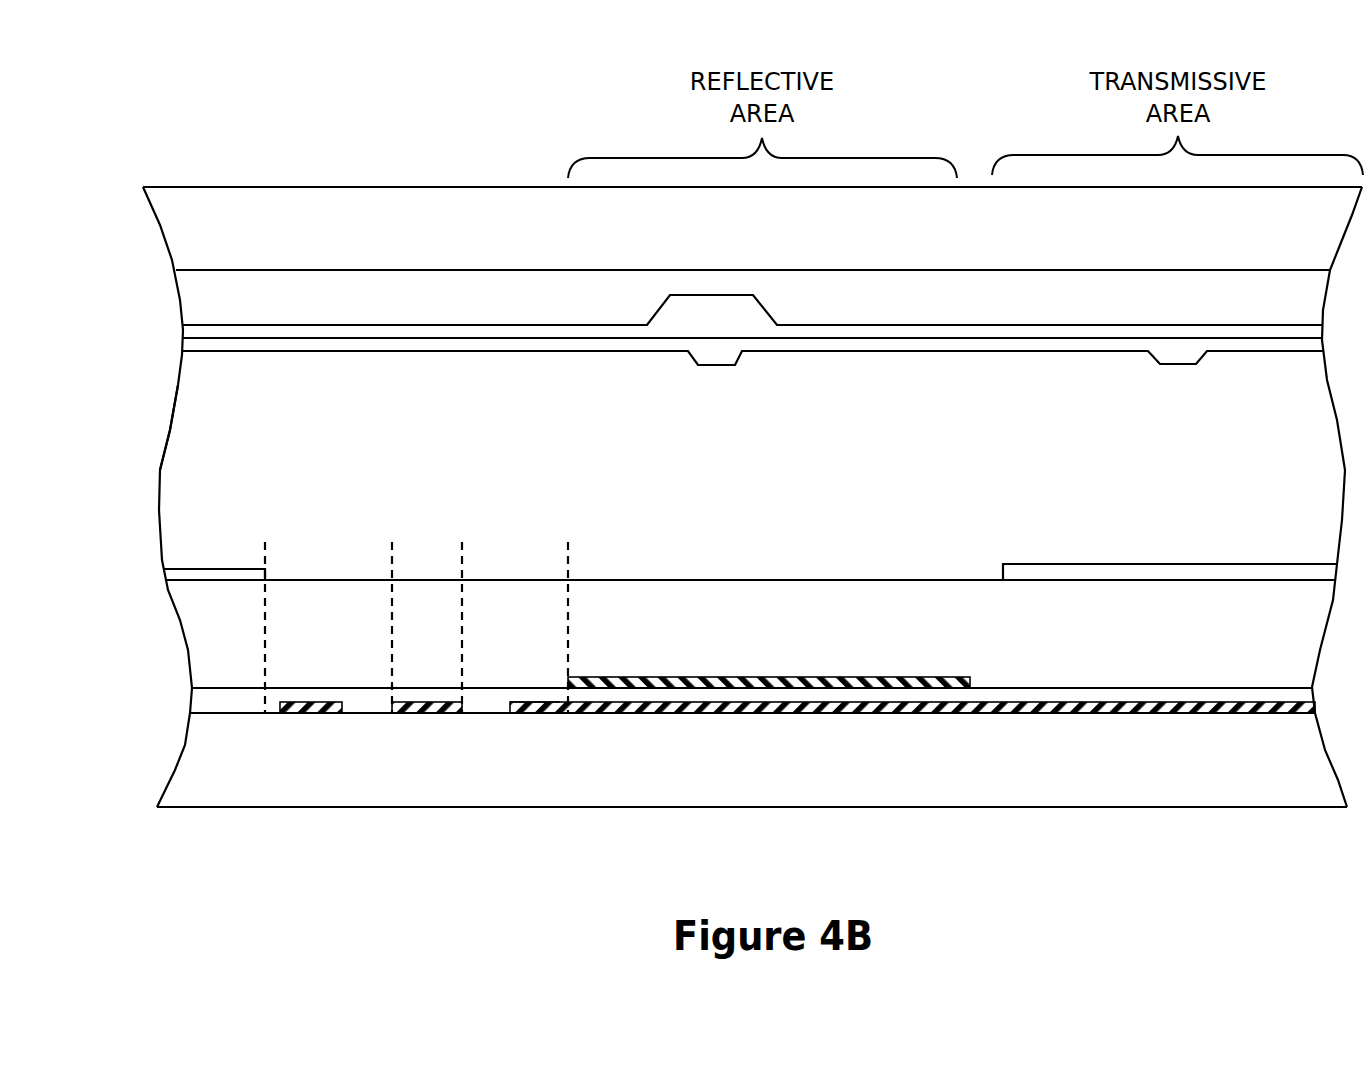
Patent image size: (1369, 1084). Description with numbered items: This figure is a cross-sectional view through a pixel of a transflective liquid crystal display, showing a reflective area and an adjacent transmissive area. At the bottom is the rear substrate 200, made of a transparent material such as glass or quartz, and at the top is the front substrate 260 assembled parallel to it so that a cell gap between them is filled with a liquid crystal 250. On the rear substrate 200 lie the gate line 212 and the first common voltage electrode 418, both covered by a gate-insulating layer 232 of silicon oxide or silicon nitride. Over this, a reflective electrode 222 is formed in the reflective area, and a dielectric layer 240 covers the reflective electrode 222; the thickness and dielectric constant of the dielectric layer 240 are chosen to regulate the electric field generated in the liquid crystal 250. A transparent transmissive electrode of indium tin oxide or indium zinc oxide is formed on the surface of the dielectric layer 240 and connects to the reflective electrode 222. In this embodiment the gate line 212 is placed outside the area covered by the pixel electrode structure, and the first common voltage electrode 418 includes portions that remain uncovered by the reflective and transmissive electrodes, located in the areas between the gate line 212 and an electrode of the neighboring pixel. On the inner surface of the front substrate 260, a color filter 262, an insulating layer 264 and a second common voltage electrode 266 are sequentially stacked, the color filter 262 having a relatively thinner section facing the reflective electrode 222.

The rear substrate 200 is at (182, 764).
The gate line 212 is at (428, 714).
The reflective electrode 222 is at (705, 676).
The gate-insulating layer 232 is at (190, 702).
The dielectric layer 240 is at (185, 623).
The liquid crystal 250 is at (170, 435).
The front substrate 260 is at (172, 222).
The color filter 262 is at (192, 288).
The insulating layer 264 is at (192, 333).
The second common voltage electrode 266 is at (183, 342).
The first common voltage electrode 418 is at (795, 714).